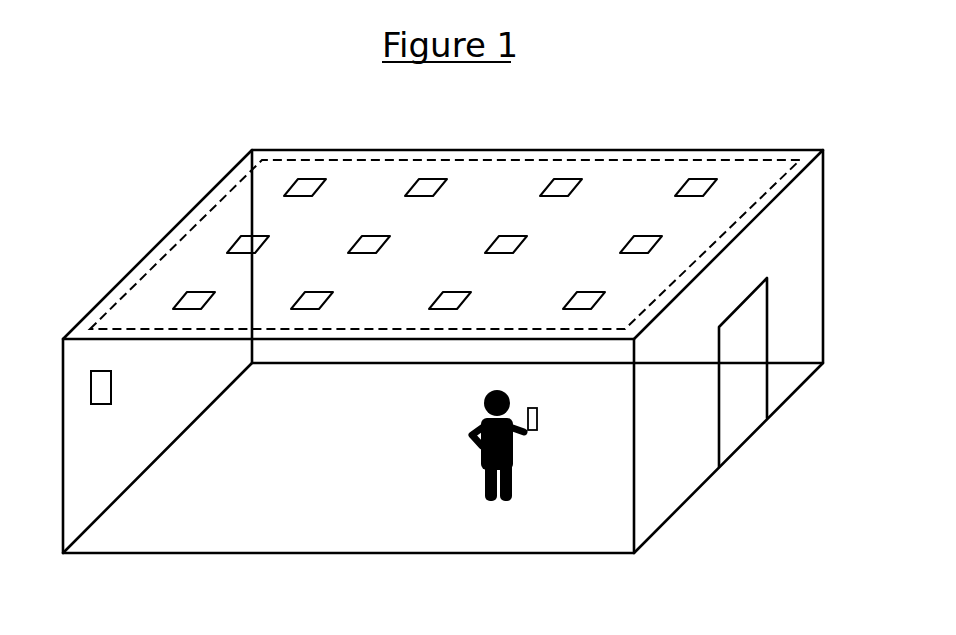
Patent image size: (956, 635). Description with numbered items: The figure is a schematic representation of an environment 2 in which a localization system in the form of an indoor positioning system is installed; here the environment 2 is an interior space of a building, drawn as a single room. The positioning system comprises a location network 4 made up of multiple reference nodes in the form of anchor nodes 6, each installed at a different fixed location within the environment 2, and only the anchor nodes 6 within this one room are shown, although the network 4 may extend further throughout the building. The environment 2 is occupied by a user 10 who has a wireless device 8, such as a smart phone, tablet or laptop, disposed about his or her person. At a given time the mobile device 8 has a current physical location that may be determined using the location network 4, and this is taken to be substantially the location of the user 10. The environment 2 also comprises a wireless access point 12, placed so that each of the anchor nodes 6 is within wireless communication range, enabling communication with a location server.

The environment 2 is at (676, 150).
The location network 4 is at (533, 160).
The anchor nodes 6 is at (582, 184).
The wireless device 8 is at (537, 418).
The user 10 is at (487, 462).
The wireless access point 12 is at (111, 388).